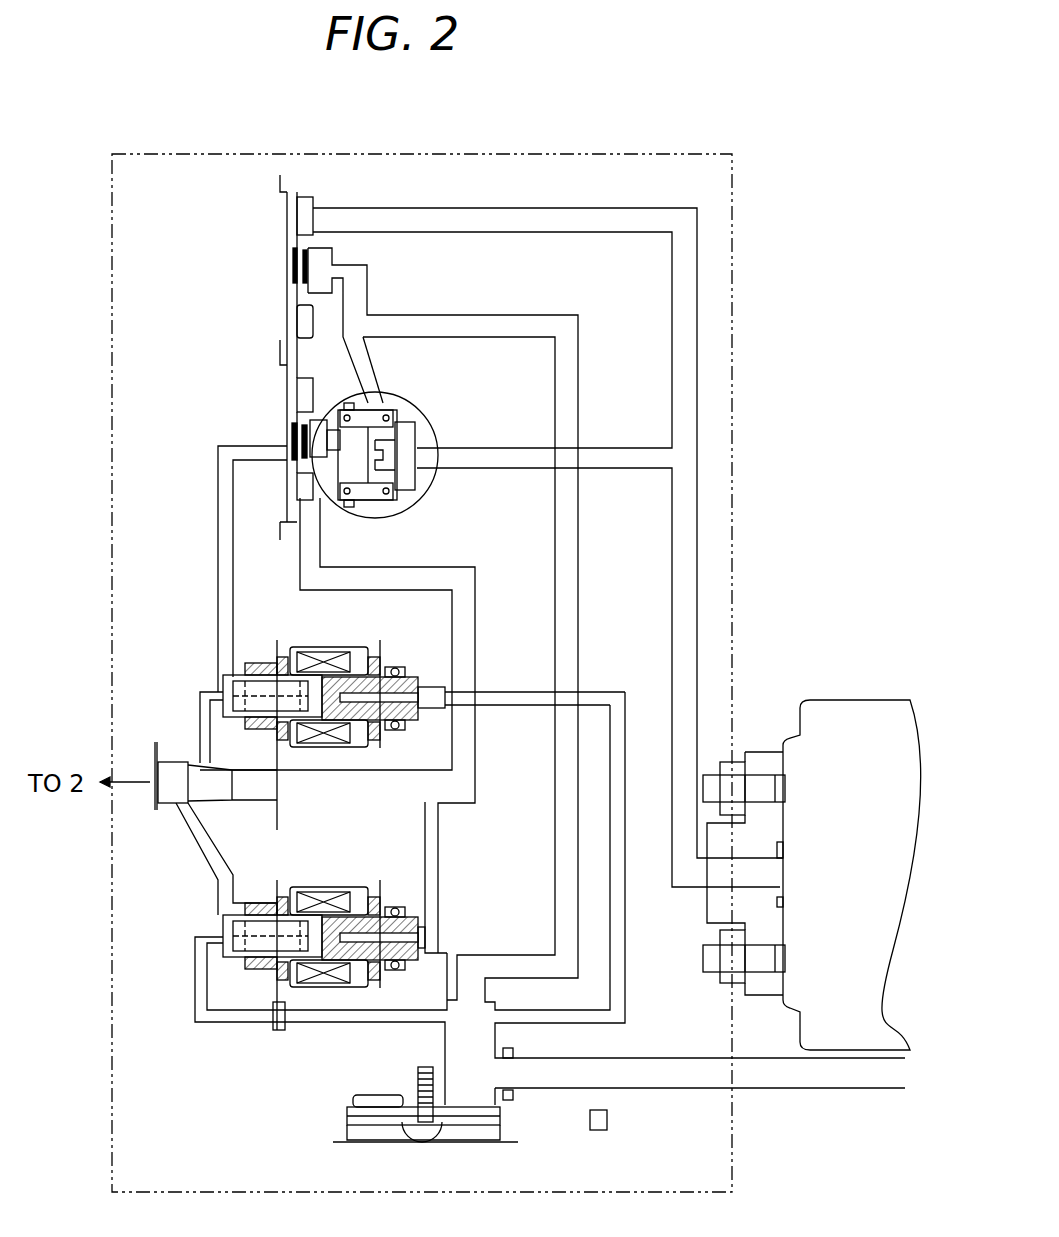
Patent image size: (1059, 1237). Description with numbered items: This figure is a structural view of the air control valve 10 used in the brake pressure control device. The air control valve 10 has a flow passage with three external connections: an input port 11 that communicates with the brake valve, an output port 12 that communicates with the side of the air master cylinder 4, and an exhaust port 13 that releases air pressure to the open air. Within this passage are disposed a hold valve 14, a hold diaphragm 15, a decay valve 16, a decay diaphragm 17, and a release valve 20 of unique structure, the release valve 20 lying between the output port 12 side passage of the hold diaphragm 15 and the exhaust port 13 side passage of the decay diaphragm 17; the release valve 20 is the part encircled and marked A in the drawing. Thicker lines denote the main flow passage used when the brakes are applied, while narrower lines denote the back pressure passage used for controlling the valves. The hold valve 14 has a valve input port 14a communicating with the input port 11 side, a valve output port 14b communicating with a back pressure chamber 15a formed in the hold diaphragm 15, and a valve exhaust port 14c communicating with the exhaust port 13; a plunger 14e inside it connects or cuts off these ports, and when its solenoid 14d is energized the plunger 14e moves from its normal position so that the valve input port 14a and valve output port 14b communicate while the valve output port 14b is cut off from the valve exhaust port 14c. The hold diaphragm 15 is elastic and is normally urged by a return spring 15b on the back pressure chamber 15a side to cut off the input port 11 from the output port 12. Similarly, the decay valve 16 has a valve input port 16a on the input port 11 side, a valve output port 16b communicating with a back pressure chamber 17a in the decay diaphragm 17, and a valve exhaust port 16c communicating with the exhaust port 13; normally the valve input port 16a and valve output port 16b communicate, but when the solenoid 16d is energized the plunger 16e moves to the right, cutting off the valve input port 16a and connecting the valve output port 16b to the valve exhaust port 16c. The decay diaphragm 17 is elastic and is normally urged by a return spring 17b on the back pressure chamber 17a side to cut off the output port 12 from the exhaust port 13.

The air master cylinder 4 is at (840, 700).
The air control valve 10 is at (733, 378).
The input port 11 is at (165, 792).
The output port 12 is at (691, 672).
The exhaust port 13 is at (487, 1142).
The hold valve 14 is at (424, 726).
The valve input port 14a is at (222, 718).
The valve output port 14b is at (222, 604).
The valve exhaust port 14c is at (433, 710).
The solenoid 14d is at (335, 746).
The plunger 14e is at (265, 742).
The hold diaphragm 15 is at (279, 381).
The back pressure chamber 15a is at (286, 440).
The return spring 15b is at (281, 472).
The decay valve 16 is at (369, 962).
The valve input port 16a is at (456, 934).
The valve output port 16b is at (199, 847).
The valve exhaust port 16c is at (195, 995).
The solenoid 16d is at (326, 983).
The plunger 16e is at (253, 968).
The decay diaphragm 17 is at (278, 207).
The back pressure chamber 17a is at (284, 241).
The return spring 17b is at (284, 287).
The release valve 20 is at (412, 480).
The detail region A is at (436, 402).